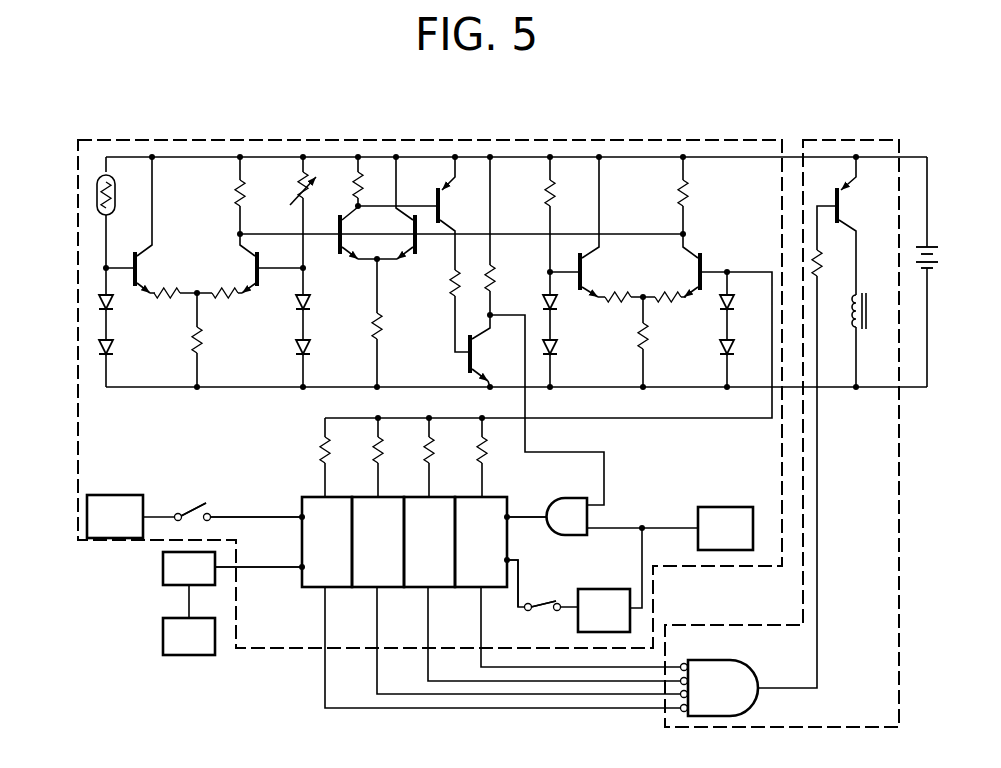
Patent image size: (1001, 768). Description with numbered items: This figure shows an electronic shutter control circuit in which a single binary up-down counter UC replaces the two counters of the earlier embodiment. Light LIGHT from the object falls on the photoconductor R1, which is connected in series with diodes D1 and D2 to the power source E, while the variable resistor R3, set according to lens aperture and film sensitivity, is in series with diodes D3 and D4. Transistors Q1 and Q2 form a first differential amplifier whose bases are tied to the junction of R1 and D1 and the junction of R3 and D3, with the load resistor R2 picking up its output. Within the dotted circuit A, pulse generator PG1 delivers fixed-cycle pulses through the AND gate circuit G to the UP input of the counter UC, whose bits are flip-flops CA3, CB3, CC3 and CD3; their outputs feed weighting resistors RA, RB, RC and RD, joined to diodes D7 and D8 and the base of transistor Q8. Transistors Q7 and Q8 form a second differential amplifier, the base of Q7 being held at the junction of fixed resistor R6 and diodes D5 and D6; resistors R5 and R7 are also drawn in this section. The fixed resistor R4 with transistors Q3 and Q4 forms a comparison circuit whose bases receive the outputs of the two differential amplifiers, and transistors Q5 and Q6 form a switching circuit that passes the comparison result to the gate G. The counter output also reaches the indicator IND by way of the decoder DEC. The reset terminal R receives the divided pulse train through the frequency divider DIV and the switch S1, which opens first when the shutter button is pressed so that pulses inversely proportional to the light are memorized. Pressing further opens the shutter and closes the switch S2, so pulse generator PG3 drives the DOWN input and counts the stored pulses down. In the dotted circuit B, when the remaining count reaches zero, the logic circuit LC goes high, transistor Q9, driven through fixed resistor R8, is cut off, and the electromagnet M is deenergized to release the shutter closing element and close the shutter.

The light LIGHT is at (72, 188).
The circuit A is at (156, 147).
The circuit B is at (876, 152).
The photoconductor R1 is at (114, 190).
The load resistor R2 is at (236, 193).
The variable resistor R3 is at (299, 187).
The fixed resistor R4 is at (355, 187).
The resistor R5 is at (493, 272).
The fixed resistor R6 is at (553, 193).
The resistor R7 is at (687, 193).
The fixed resistor R8 is at (820, 262).
The weighting resistor RA is at (320, 448).
The weighting resistor RB is at (373, 448).
The weighting resistor RC is at (424, 448).
The weighting resistor RD is at (477, 448).
The transistor Q1 is at (140, 263).
The transistor Q2 is at (255, 275).
The transistor Q3 is at (358, 256).
The transistor Q4 is at (399, 256).
The transistor Q5 is at (442, 201).
The transistor Q6 is at (480, 360).
The transistor Q7 is at (583, 270).
The transistor Q8 is at (698, 273).
The transistor Q9 is at (841, 203).
The diode D1 is at (116, 304).
The diode D2 is at (116, 350).
The diode D3 is at (312, 304).
The diode D4 is at (312, 350).
The diode D5 is at (559, 306).
The diode D6 is at (559, 350).
The diode D7 is at (720, 304).
The diode D8 is at (720, 350).
The electromagnet M is at (871, 293).
The power source E is at (931, 258).
The switch S1 is at (548, 603).
The switch S2 is at (183, 505).
The AND gate circuit G is at (567, 516).
The logic circuit LC is at (720, 688).
The pulse generator PG1 is at (725, 528).
The pulse generator PG3 is at (115, 516).
The decoder DEC is at (189, 568).
The indicator IND is at (189, 636).
The frequency divider DIV is at (604, 610).
The flip-flop CA3 is at (327, 542).
The flip-flop CB3 is at (378, 542).
The flip-flop CC3 is at (429, 542).
The flip-flop CD3 is at (481, 542).
The UP input UP is at (508, 517).
The DOWN input DOWN is at (302, 517).
The binary up-down counter UC is at (302, 567).
The reset input R is at (508, 560).